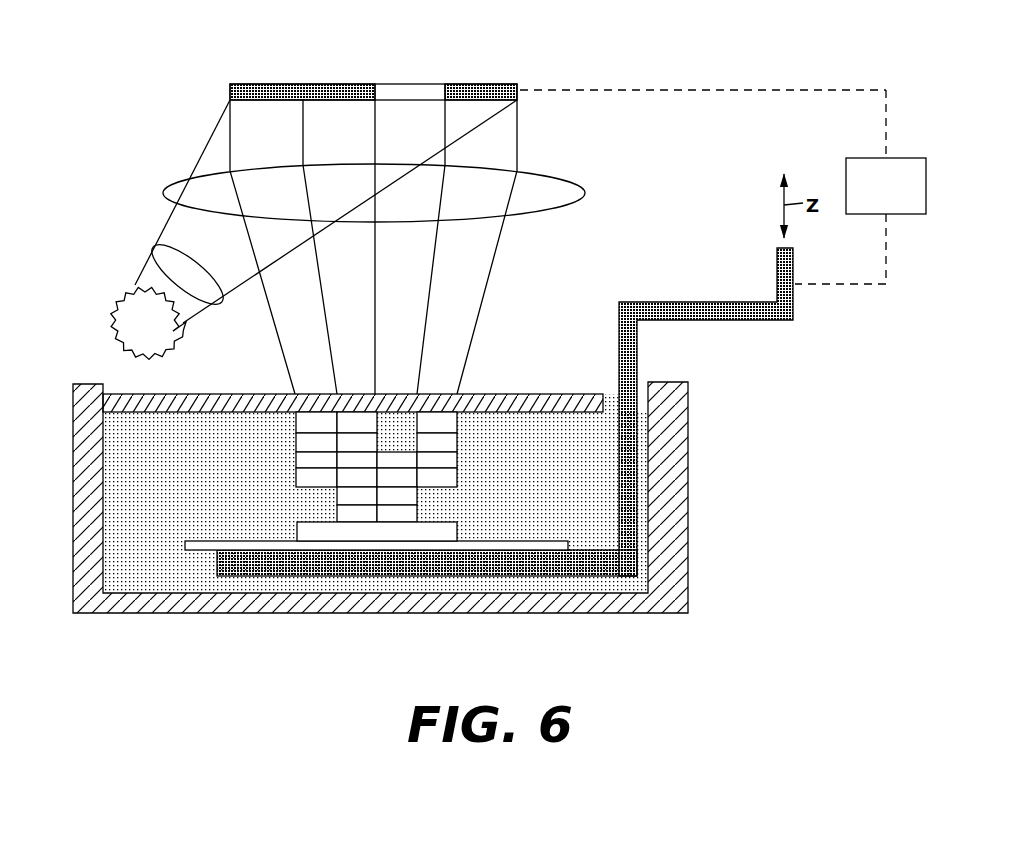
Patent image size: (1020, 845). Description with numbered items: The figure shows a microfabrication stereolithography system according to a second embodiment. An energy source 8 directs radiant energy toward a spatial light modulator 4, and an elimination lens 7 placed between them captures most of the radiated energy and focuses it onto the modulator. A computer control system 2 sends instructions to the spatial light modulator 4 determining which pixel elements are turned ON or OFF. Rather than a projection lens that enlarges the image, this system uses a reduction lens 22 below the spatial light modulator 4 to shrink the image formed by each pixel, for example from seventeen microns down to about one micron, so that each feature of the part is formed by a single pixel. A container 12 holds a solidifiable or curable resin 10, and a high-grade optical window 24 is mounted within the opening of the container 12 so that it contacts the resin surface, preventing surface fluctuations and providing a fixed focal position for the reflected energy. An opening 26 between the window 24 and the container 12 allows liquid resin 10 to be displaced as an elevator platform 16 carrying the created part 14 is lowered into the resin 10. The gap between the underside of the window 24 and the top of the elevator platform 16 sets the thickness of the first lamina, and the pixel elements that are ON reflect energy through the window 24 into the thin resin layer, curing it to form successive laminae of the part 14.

The computer control system 2 is at (893, 199).
The spatial light modulator 4 is at (244, 84).
The lens 7 is at (148, 249).
The energy source 8 is at (103, 309).
The resin 10 is at (190, 450).
The container 12 is at (72, 381).
The created part 14 is at (470, 453).
The elevator platform 16 is at (727, 323).
The reduction lens 22 is at (158, 192).
The optical window 24 is at (507, 392).
The opening 26 is at (610, 391).